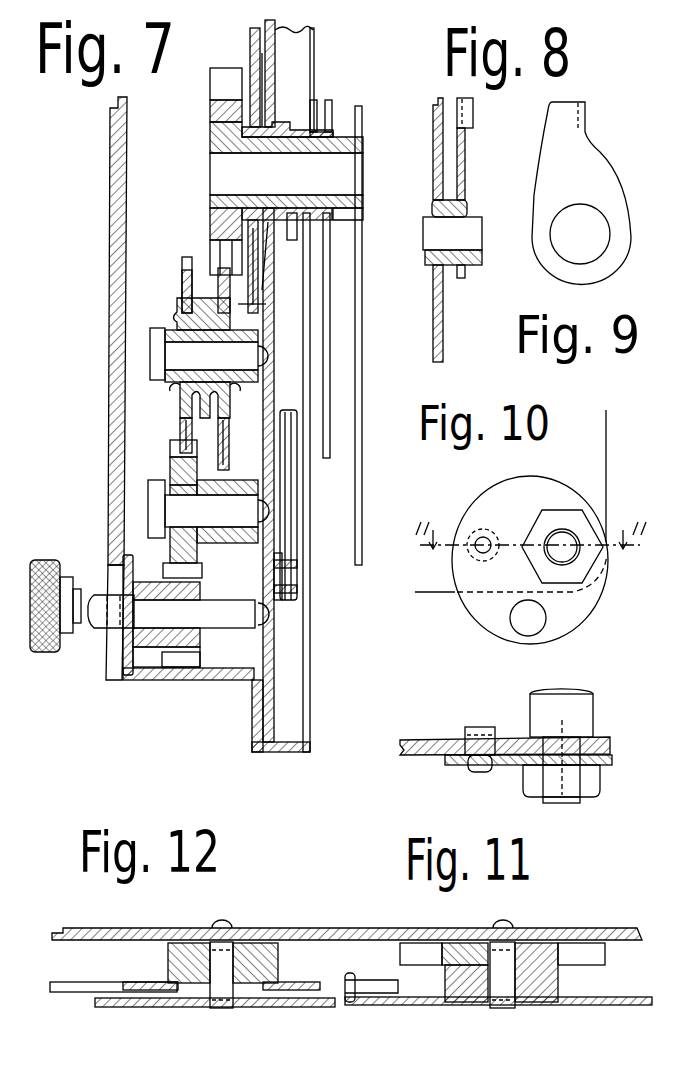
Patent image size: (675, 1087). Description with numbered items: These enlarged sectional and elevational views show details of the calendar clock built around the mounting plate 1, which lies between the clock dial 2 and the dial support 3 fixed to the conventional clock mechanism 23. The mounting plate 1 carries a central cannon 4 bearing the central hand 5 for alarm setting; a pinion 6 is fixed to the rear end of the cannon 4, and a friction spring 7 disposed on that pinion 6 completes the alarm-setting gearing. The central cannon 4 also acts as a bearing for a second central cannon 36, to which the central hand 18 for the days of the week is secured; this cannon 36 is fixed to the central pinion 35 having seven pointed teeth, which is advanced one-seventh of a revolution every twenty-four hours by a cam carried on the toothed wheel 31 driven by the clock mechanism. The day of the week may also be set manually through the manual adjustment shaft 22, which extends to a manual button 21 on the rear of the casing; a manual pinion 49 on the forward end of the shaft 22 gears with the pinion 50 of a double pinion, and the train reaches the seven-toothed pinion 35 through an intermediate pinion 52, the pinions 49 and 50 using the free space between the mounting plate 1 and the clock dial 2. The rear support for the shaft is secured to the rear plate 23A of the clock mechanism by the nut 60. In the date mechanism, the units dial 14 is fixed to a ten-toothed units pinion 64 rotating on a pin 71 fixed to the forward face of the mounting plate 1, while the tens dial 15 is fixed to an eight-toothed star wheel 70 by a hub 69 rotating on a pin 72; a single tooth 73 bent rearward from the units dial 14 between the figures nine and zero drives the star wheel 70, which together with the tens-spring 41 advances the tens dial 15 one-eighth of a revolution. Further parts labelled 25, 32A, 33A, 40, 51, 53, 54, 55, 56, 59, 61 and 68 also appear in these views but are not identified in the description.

In FIG. 7, the mounting plate 1 is at (268, 632).
In FIG. 12, the mounting plate 1 is at (320, 930).
In FIG. 7, the clock dial 2 is at (306, 666).
In FIG. 7, the dial support 3 is at (226, 681).
In FIG. 7, the central cannon 4 is at (286, 127).
In FIG. 7, the central hand for alarm setting 5 is at (327, 373).
In FIG. 7, the pinion 6 is at (258, 305).
In FIG. 7, the spring 7 is at (274, 254).
In FIG. 12, the units dial 14 is at (626, 1006).
In FIG. 12, the tens dial 15 is at (316, 1008).
In FIG. 7, the central hand for the days of the week 18 is at (355, 506).
In FIG. 7, the manual button 21 is at (44, 560).
In FIG. 7, the manual adjustment shaft 22 is at (99, 594).
In FIG. 10, the manual adjustment shaft 22 is at (520, 625).
In FIG. 7, the clock mechanism 23 is at (106, 672).
In FIG. 10, the rear plate of the clock mechanism 23A is at (511, 501).
In FIG. 11, the rear plate of the clock mechanism 23A is at (425, 738).
In FIG. 11, the stud 25 is at (572, 703).
In FIG. 8, the toothed wheel 31 is at (443, 334).
In FIG. 8, the hub 32A is at (468, 264).
In FIG. 8, the rod 33A is at (465, 140).
In FIG. 7, the central pinion 35 is at (210, 88).
In FIG. 7, the second central cannon 36 is at (210, 210).
In FIG. 7, the clip 40 is at (290, 557).
In FIG. 7, the tens-spring 41 is at (292, 480).
In FIG. 7, the manual pinion 49 is at (172, 668).
In FIG. 7, the pinion 50 is at (170, 462).
In FIG. 7, the lever 51 is at (183, 290).
In FIG. 7, the intermediate pinion 52 is at (219, 432).
In FIG. 7, the upper hub 53 is at (182, 328).
In FIG. 7, the middle hub 54 is at (232, 540).
In FIG. 7, the cap 55 is at (150, 368).
In FIG. 7, the cap 56 is at (148, 492).
In FIG. 10, the disc 59 is at (583, 615).
In FIG. 11, the disc 59 is at (447, 760).
In FIG. 10, the nut 60 is at (537, 523).
In FIG. 11, the nut 60 is at (593, 788).
In FIG. 11, the rivet 61 is at (486, 727).
In FIG. 12, the units pinion 64 is at (605, 960).
In FIG. 12, the bushing 68 is at (530, 1003).
In FIG. 12, the hub 69 is at (246, 990).
In FIG. 12, the star wheel 70 is at (73, 993).
In FIG. 12, the pin 71 is at (500, 1010).
In FIG. 12, the pin 72 is at (216, 1010).
In FIG. 12, the single tooth 73 is at (349, 975).